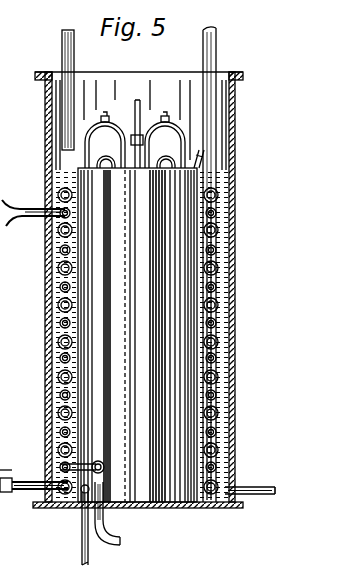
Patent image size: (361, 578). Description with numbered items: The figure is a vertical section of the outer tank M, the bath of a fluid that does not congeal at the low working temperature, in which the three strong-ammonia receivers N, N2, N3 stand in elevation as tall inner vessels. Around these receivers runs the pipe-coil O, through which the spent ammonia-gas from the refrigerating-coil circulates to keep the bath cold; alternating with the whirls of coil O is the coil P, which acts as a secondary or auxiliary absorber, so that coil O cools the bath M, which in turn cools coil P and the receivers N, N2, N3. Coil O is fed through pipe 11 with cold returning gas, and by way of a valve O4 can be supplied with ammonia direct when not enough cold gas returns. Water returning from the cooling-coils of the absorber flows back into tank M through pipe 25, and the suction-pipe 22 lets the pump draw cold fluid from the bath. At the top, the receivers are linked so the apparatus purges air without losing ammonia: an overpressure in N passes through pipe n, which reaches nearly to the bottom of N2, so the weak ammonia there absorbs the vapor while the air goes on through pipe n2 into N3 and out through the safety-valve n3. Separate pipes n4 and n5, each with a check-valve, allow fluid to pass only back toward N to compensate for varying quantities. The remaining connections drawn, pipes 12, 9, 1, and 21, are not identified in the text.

The outer tank M is at (45, 133).
The pipe 25 is at (76, 90).
The pipe 11 is at (216, 56).
The strong-ammonia receiver N is at (137, 335).
The receiver N2 is at (164, 336).
The receiver N3 is at (222, 165).
The pipe n is at (105, 140).
The pipe n2 is at (165, 140).
The safety-valve n3 is at (198, 152).
The pipe n4 is at (104, 159).
The pipe n5 is at (166, 159).
The pipe-coil O is at (218, 193).
The coil P is at (216, 215).
The valve O4 is at (7, 462).
The inlet pipe 12 is at (33, 212).
The pipe 9 is at (33, 482).
The suction-pipe 22 is at (259, 492).
The discharge pipe 1 is at (107, 513).
The pipe 21 is at (82, 535).